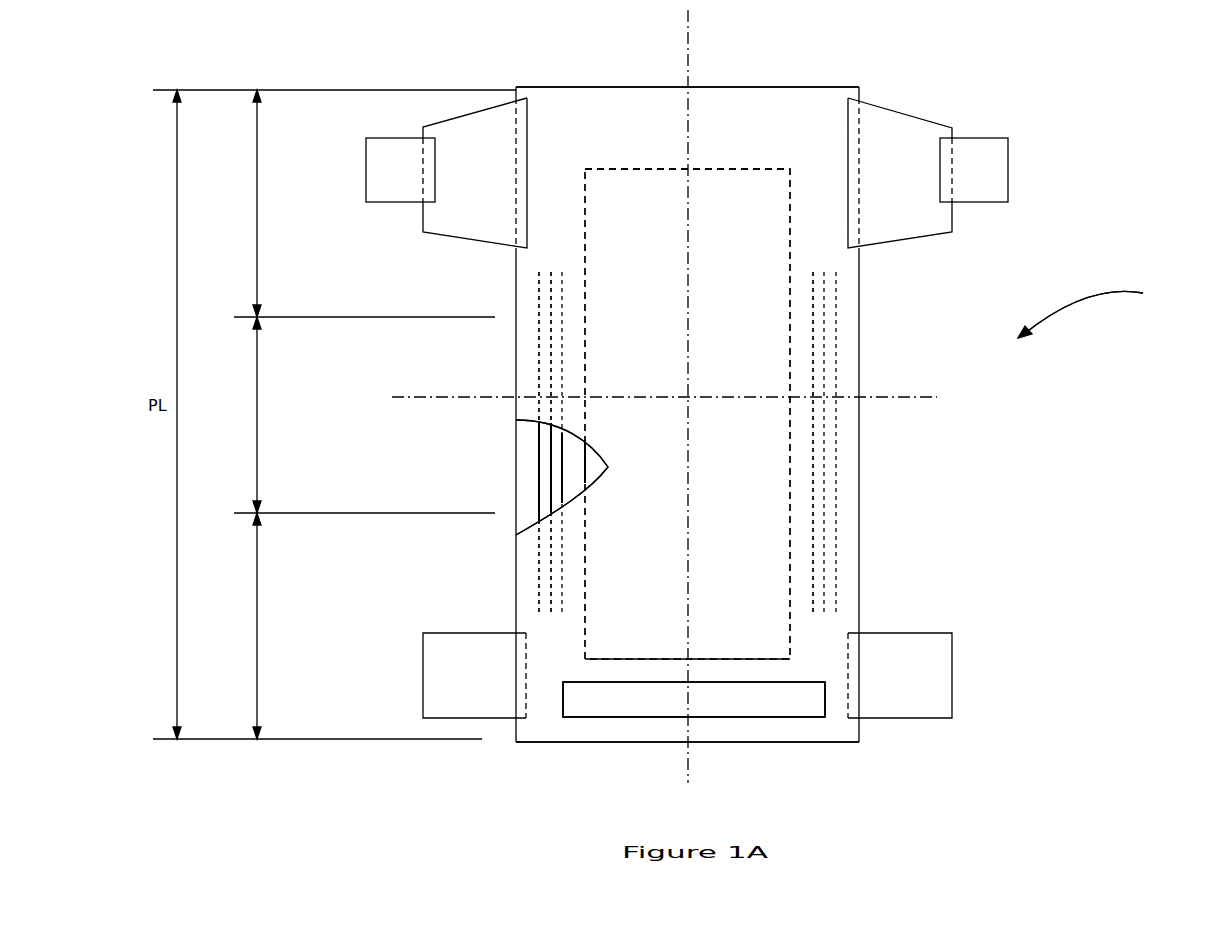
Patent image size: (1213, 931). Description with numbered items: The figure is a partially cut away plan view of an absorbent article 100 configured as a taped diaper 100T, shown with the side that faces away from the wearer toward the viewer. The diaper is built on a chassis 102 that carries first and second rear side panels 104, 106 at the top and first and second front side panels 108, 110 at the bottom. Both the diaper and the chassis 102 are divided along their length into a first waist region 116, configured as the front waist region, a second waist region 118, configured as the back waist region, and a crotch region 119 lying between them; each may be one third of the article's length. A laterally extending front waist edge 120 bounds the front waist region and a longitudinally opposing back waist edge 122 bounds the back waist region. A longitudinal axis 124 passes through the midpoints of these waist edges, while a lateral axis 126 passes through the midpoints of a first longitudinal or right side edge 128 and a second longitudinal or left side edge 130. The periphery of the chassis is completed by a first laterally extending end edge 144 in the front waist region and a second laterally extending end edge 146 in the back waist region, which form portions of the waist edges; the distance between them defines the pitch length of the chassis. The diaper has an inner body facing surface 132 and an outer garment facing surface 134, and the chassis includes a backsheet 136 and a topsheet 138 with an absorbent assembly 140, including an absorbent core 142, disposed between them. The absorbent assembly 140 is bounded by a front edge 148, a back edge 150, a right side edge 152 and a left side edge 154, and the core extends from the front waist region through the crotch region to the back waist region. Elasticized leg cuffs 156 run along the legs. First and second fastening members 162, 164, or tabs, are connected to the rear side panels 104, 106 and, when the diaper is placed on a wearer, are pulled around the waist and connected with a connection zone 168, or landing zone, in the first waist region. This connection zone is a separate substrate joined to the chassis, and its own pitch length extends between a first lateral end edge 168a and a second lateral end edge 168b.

The absorbent article 100 is at (1107, 310).
The taped diaper 100T is at (1112, 312).
The chassis 102 is at (843, 605).
The first rear side panel 104 is at (893, 147).
The second rear side panel 106 is at (440, 213).
The first front side panel 108 is at (880, 695).
The second front side panel 110 is at (458, 660).
The first waist region 116 is at (317, 626).
The second waist region 118 is at (334, 203).
The crotch region 119 is at (355, 415).
The front waist edge 120 is at (526, 742).
The back waist edge 122 is at (585, 87).
The longitudinal axis 124 is at (688, 772).
The lateral axis 126 is at (892, 397).
The first longitudinal side edge 128 is at (859, 320).
The second longitudinal side edge 130 is at (516, 305).
The inner body facing surface 132 is at (528, 489).
The outer garment facing surface 134 is at (527, 377).
The backsheet 136 is at (527, 377).
The topsheet 138 is at (528, 489).
The absorbent assembly 140 is at (733, 205).
The absorbent core 142 is at (733, 205).
The first laterally extending end edge 144 is at (573, 742).
The second laterally extending end edge 146 is at (723, 87).
The front edge of absorbent assembly 148 is at (755, 659).
The back edge of absorbent assembly 150 is at (667, 169).
The right side edge of absorbent assembly 152 is at (790, 377).
The left side edge of absorbent assembly 154 is at (585, 353).
The elasticized leg cuffs 156 is at (540, 503).
The first fastening member 162 is at (992, 160).
The second fastening member 164 is at (377, 157).
The connection zone 168 is at (752, 705).
The first lateral end edge of connection zone 168a is at (722, 717).
The second lateral end edge of connection zone 168b is at (599, 686).